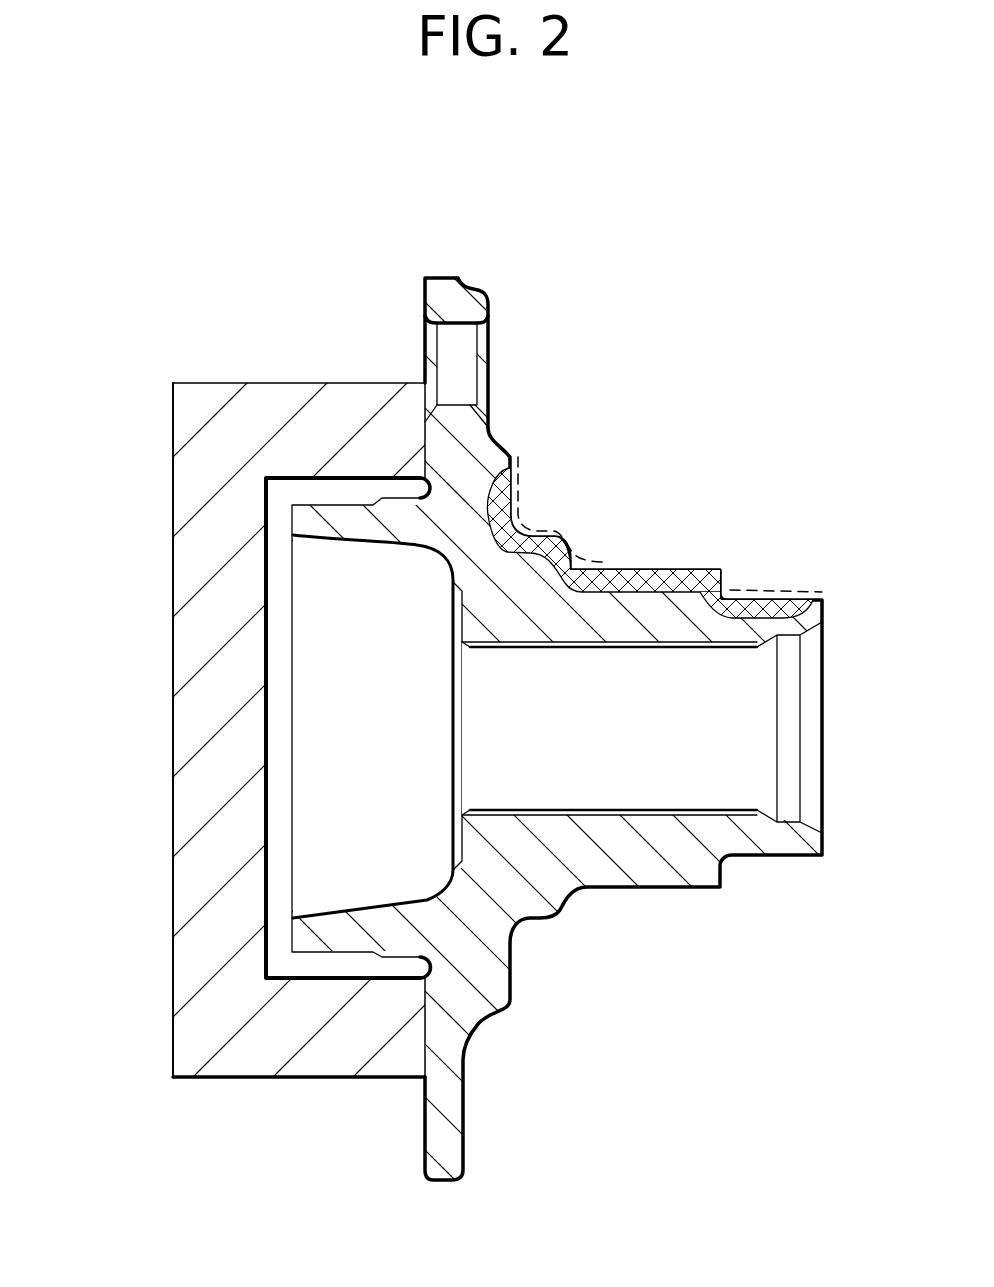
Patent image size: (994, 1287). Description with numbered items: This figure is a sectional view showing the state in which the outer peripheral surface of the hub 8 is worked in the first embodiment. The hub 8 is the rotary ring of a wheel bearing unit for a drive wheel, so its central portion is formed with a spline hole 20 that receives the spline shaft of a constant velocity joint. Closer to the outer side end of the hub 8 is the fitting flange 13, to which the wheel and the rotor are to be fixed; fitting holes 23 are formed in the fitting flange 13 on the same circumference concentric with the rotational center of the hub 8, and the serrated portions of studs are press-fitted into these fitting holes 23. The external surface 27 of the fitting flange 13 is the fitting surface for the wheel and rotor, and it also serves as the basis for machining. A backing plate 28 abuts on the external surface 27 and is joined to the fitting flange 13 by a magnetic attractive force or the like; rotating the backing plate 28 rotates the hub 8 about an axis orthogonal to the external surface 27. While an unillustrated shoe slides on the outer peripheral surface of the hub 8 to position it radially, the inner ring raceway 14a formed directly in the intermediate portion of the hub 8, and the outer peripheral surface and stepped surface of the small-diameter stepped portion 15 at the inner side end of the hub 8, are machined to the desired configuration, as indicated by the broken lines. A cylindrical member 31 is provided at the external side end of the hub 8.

The hub 8 is at (450, 548).
The fitting flange 13 is at (442, 288).
The inner ring raceway 14a is at (578, 550).
The small-diameter stepped portion 15 is at (768, 597).
The spline hole 20 is at (733, 807).
The fitting hole 23 is at (473, 327).
The external surface 27 is at (422, 425).
The backing plate 28 is at (197, 648).
The cylindrical member 31 is at (310, 945).